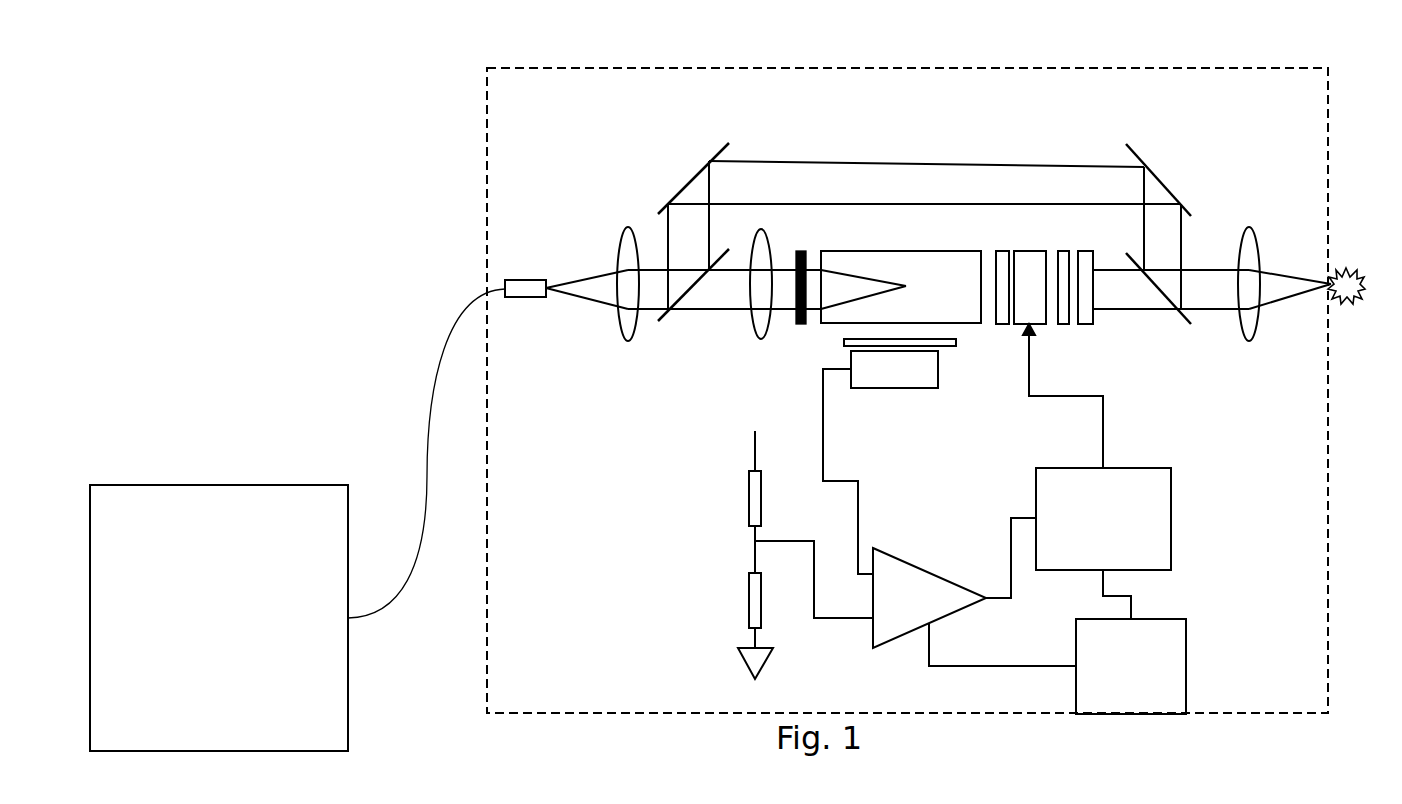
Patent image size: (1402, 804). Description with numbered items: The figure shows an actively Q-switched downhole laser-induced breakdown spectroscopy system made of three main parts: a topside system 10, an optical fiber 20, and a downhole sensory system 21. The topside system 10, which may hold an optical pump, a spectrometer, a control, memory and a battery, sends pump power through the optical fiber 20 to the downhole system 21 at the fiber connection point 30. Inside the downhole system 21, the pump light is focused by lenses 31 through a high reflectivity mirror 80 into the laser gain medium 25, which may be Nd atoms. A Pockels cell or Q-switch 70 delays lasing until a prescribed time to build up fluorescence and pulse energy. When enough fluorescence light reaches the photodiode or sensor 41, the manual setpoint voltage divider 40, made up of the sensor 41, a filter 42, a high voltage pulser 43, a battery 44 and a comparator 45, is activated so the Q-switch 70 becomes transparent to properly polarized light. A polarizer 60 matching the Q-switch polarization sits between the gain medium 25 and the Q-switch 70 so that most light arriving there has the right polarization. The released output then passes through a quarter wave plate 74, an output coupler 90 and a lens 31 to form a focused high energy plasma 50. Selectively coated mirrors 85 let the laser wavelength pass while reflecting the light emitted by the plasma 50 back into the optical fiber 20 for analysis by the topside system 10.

The topside system 10 is at (219, 618).
The optical fiber 20 is at (430, 382).
The downhole sensory system 21 is at (485, 202).
The laser gain medium 25 is at (901, 287).
The fiber connection point 30 is at (523, 270).
The lenses 31 is at (627, 226).
The manual setpoint voltage divider 40 is at (754, 540).
The photodiode or sensor 41 is at (869, 395).
The filter 42 is at (958, 345).
The high voltage pulser 43 is at (1103, 519).
The battery 44 is at (1131, 666).
The comparator 45 is at (929, 598).
The high energy plasma 50 is at (1343, 307).
The polarizer 60 is at (988, 238).
The Pockels cell or Q-switch 70 is at (1025, 236).
The quarter wave plate 74 is at (1068, 248).
The high reflectivity mirror 80 is at (795, 320).
The mirrors 85 is at (695, 175).
The output coupler 90 is at (1092, 323).